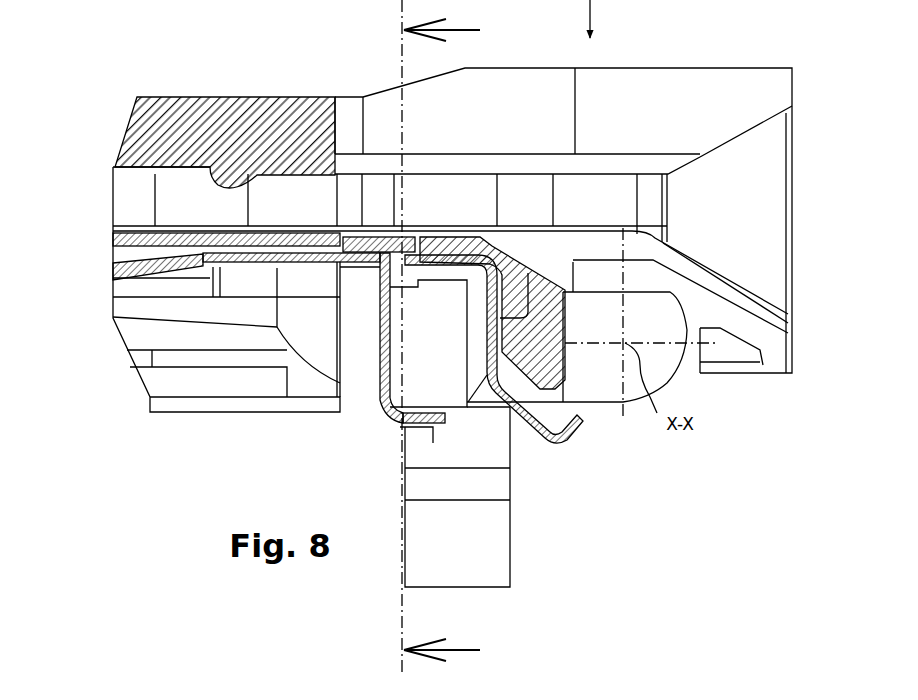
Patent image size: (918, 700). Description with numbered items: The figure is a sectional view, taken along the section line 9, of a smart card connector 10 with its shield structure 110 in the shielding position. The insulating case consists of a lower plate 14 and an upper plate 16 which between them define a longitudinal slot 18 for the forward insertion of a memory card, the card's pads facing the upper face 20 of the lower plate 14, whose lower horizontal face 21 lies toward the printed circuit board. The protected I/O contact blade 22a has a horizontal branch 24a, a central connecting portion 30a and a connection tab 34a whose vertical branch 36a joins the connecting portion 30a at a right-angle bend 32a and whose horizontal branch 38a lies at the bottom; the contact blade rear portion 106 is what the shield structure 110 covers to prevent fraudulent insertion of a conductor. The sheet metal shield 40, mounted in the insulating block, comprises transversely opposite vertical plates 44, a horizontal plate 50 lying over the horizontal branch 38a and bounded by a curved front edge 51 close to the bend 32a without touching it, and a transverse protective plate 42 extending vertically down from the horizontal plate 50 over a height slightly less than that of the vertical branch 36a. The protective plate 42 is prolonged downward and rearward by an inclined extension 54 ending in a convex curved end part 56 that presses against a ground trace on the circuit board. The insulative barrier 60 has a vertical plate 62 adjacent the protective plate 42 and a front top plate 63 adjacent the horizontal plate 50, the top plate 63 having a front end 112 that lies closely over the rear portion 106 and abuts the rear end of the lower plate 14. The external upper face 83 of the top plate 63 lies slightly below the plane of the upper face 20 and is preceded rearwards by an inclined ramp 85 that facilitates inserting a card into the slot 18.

The section line 9- 9 is at (441, 337).
The smart card connector 10 is at (645, 38).
The lower plate 14 is at (298, 219).
The upper plate 16 is at (207, 127).
The slot 18 is at (746, 215).
The upper face 20 is at (347, 233).
The lower horizontal face 21 is at (178, 413).
The I/O contact blade 22a is at (250, 278).
The horizontal branch 24a is at (127, 271).
The central connecting portion 30a is at (297, 253).
The right-angle bend 32a is at (400, 228).
The connection tab 34a is at (369, 363).
The vertical branch 36a is at (384, 344).
The horizontal branch 38a is at (400, 437).
The sheet metal shield 40 is at (483, 337).
The protective plate 42 is at (490, 268).
The vertical plates 44 is at (484, 497).
The horizontal plate 50 is at (462, 237).
The curved front edge 51 is at (420, 227).
The inclined extension 54 is at (522, 424).
The end parts 56 is at (563, 434).
The insulative barrier 60 is at (567, 353).
The vertical plate 62 is at (505, 343).
The front top plate 63 is at (506, 236).
The external upper face 83 is at (378, 208).
The inclined ramp 85 is at (548, 278).
The contact blade rear portions 106 is at (364, 302).
The shield structure 110 is at (571, 373).
The front end 112 is at (379, 214).